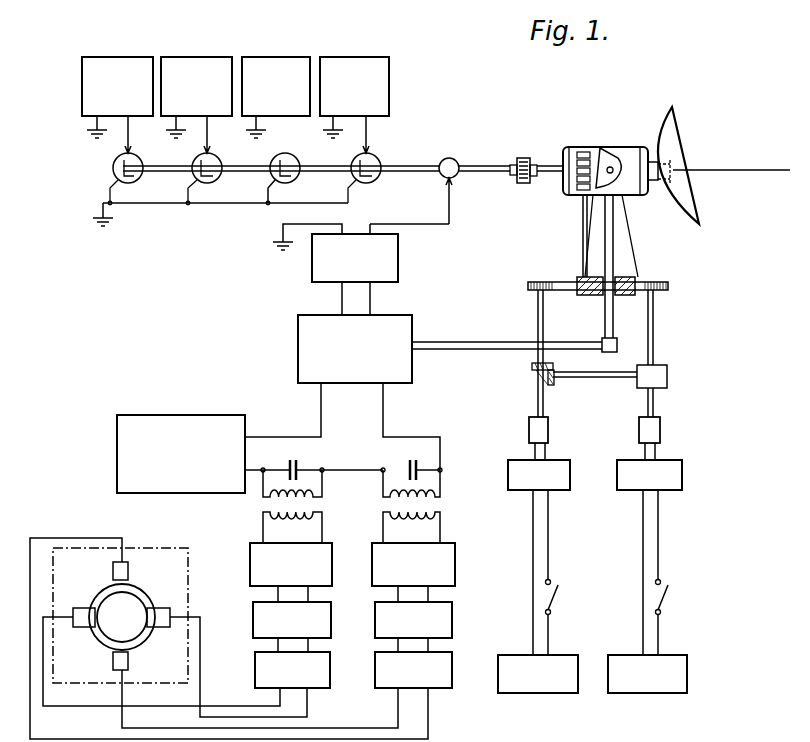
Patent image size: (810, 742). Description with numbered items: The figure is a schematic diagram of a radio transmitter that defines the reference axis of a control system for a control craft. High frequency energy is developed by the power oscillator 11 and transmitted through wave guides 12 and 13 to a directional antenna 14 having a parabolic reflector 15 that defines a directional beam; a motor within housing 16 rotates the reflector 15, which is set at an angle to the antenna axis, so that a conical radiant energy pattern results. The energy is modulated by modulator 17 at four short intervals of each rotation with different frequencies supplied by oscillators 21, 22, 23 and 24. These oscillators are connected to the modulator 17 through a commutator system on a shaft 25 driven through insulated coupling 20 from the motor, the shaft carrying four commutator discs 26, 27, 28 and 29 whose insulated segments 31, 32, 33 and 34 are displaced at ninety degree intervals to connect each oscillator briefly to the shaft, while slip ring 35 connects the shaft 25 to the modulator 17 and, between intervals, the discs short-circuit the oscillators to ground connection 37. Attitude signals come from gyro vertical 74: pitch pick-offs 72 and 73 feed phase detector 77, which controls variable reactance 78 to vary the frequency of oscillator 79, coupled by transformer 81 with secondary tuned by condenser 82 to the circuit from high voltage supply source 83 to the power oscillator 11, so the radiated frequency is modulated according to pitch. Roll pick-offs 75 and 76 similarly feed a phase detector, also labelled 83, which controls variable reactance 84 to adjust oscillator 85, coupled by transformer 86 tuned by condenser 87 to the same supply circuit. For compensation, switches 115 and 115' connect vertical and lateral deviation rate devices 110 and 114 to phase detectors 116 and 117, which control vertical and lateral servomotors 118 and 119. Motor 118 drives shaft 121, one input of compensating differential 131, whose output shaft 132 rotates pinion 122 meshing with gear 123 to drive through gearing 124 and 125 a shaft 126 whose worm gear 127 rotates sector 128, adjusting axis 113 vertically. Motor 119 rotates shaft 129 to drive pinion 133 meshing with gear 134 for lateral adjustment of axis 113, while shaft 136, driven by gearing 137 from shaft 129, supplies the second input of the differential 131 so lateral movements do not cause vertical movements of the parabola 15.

The power oscillator 11 is at (298, 347).
The wave guide 12 is at (475, 342).
The wave guide 13 is at (607, 234).
The directional antenna 14 is at (672, 163).
The parabolic reflector 15 is at (700, 212).
The motor housing 16 is at (628, 150).
The modulator 17 is at (312, 276).
The insulated coupling 20 is at (524, 184).
The oscillator 21 is at (130, 57).
The oscillator 22 is at (205, 57).
The oscillator 23 is at (281, 57).
The oscillator 24 is at (363, 57).
The shaft 25 is at (488, 166).
The commutator disc 26 is at (113, 170).
The commutator disc 27 is at (215, 178).
The commutator disc 28 is at (296, 176).
The commutator disc 29 is at (370, 180).
The segment 31 is at (118, 156).
The segment 32 is at (215, 158).
The segment 33 is at (284, 180).
The segment 34 is at (356, 158).
The slip ring 35 is at (448, 158).
The ground connection 37 is at (151, 204).
The pick-off 72 is at (113, 571).
The pick-off 73 is at (130, 664).
The gyro vertical 74 is at (140, 548).
The pick-off 75 is at (165, 608).
The pick-off 76 is at (85, 630).
The phase detector 77 is at (452, 661).
The variable reactance 78 is at (452, 611).
The oscillator 79 is at (455, 571).
The transformer 81 is at (441, 514).
The condenser 82 is at (420, 464).
The high voltage supply source 83 is at (149, 415).
The variable reactance 84 is at (331, 633).
The oscillator 85 is at (332, 569).
The transformer 86 is at (323, 514).
The condenser 87 is at (300, 467).
The vertical deviation rate device 110 is at (665, 694).
The axis 113 is at (739, 169).
The lateral deviation rate device 114 is at (555, 694).
The switch 115 is at (683, 597).
The switch 115' is at (569, 601).
The phase detector 116 is at (623, 491).
The phase detector 117 is at (562, 491).
The vertical servomotor 118 is at (639, 436).
The lateral servomotor 119 is at (529, 431).
The shaft 121 is at (655, 406).
The pinion 122 is at (667, 290).
The gear 123 is at (632, 293).
The gearing 124 is at (630, 278).
The gearing 125 is at (577, 279).
The shaft 126 is at (581, 236).
The worm gear 127 is at (578, 150).
The sector 128 is at (605, 150).
The shaft 129 is at (537, 401).
The compensating differential 131 is at (667, 379).
The shaft 132 is at (655, 343).
The pinion 133 is at (529, 283).
The gear 134 is at (575, 292).
The shaft 136 is at (595, 379).
The gearing 137 is at (535, 371).